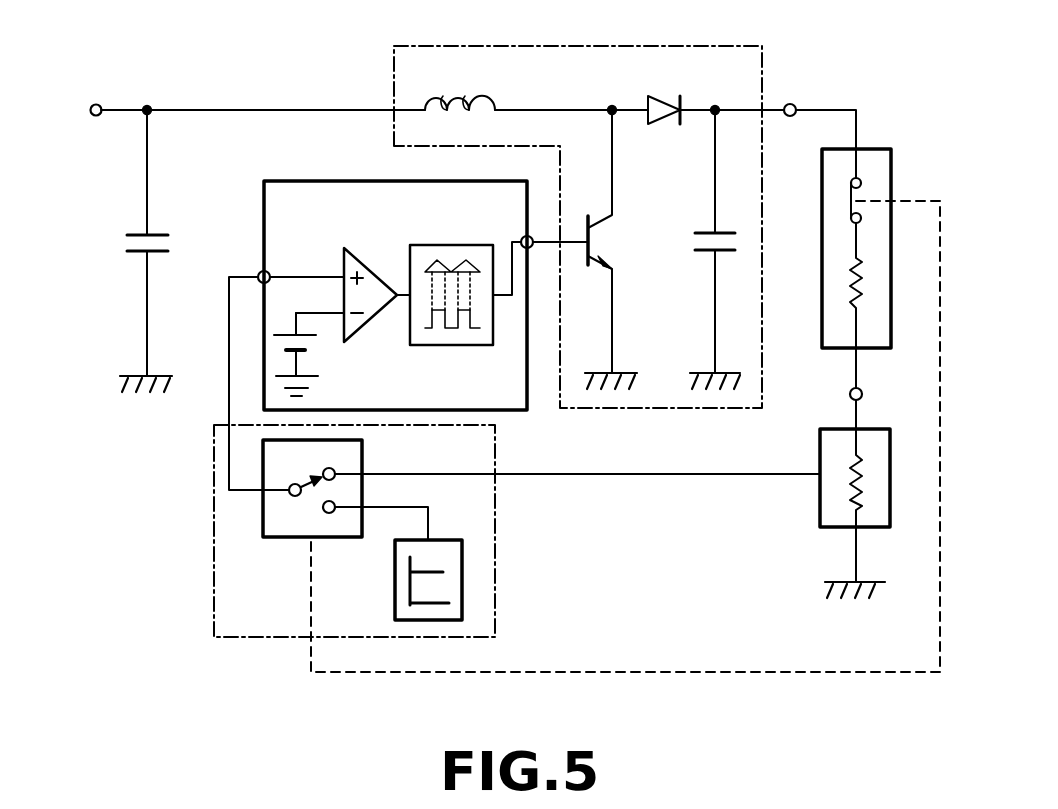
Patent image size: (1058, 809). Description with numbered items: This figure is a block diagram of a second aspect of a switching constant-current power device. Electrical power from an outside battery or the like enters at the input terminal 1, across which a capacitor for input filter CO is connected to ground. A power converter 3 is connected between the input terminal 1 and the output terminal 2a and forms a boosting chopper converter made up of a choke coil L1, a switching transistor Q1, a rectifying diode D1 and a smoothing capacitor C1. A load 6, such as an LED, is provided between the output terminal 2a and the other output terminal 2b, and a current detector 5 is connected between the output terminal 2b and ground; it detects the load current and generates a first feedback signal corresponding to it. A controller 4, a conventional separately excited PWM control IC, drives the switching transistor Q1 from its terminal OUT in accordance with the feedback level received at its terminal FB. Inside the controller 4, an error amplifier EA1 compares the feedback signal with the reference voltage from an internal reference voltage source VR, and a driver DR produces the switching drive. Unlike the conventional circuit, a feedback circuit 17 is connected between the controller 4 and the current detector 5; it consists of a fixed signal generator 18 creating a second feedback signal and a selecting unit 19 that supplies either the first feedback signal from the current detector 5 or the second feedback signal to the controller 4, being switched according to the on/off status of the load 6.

The input terminal 1 is at (96, 104).
The output terminal 2a is at (794, 103).
The output terminal 2b is at (862, 394).
The power converter 3 is at (394, 74).
The controller 4 is at (365, 295).
The current detector 5 is at (878, 528).
The load 6 is at (882, 148).
The feedback circuit 17 is at (495, 588).
The fixed signal generator 18 is at (395, 585).
The selecting unit 19 is at (272, 538).
The capacitor for input filter CO is at (126, 253).
The choke coil L1 is at (460, 83).
The rectifying diode D1 is at (664, 90).
The switching transistor Q1 is at (591, 251).
The smoothing capacitor C1 is at (706, 251).
The feedback terminal FB is at (269, 272).
The output terminal of controller OUT is at (522, 236).
The error amplifier EA1 is at (366, 262).
The reference voltage source VR is at (314, 345).
The driver DR is at (452, 350).